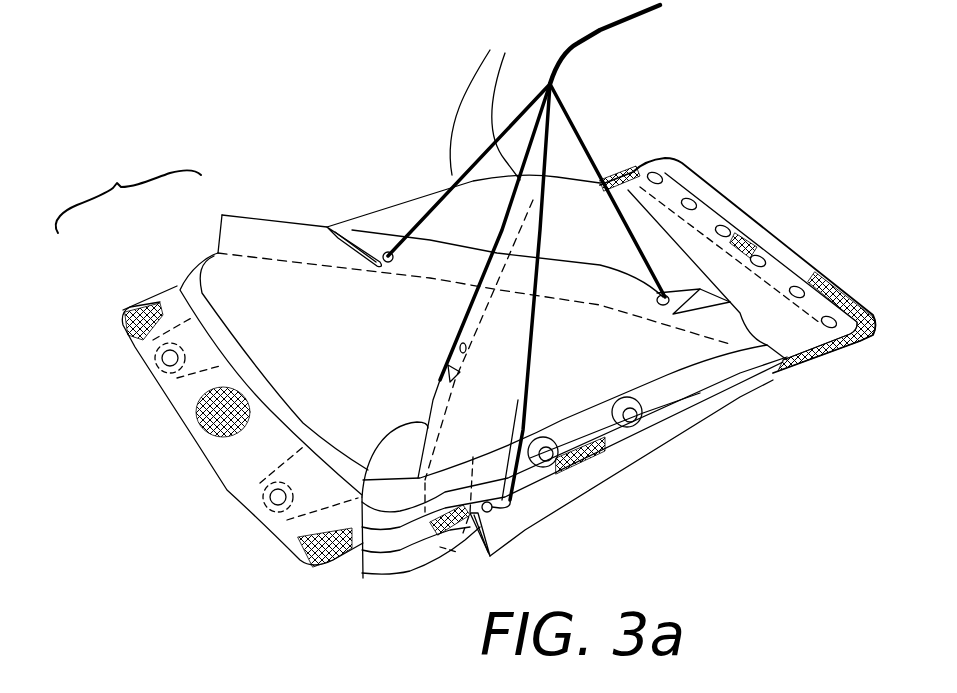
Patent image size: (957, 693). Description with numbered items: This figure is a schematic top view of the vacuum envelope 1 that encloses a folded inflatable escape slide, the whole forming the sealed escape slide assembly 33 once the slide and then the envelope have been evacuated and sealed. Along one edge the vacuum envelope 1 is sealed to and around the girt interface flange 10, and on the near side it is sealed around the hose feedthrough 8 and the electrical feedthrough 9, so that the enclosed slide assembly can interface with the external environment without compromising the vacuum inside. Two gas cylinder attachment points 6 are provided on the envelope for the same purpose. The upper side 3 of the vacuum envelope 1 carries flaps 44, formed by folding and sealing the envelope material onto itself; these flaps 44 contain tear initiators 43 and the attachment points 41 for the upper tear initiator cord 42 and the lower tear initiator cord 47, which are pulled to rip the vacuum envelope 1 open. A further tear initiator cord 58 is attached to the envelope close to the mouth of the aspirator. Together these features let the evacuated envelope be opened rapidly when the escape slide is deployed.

The vacuum envelope 1 is at (286, 302).
The upper side 3 is at (610, 355).
The gas cylinder attachment points 6 is at (157, 370).
The hose feedthrough 8 is at (556, 460).
The electrical feedthrough 9 is at (640, 420).
The girt interface flange 10 is at (678, 178).
The sealed escape slide assembly 33 is at (128, 186).
The attachment points 41 is at (387, 251).
The upper tear initiator cord 42 is at (573, 43).
The tear initiators 43 is at (328, 225).
The flaps 44 is at (270, 220).
The lower tear initiator cord 47 is at (517, 175).
The tear initiator cord 58 is at (512, 508).